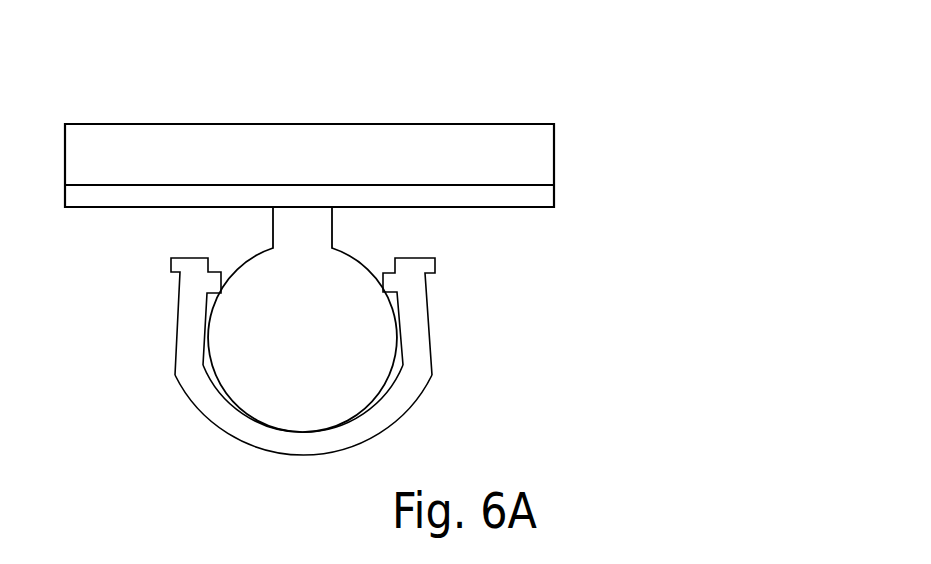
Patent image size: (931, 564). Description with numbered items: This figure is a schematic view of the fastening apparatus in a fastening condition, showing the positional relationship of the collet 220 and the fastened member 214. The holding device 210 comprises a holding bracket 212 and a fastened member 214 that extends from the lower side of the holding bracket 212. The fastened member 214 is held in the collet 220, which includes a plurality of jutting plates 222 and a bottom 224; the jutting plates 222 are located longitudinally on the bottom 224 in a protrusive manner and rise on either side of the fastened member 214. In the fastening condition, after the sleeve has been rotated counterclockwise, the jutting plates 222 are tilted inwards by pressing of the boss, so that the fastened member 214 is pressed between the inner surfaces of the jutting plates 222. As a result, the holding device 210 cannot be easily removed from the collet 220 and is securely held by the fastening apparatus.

The holding device 210 is at (440, 216).
The holding bracket 212 is at (509, 161).
The fastened member 214 is at (303, 297).
The collet 220 is at (493, 346).
The jutting plates 222 is at (410, 284).
The bottom 224 is at (377, 419).